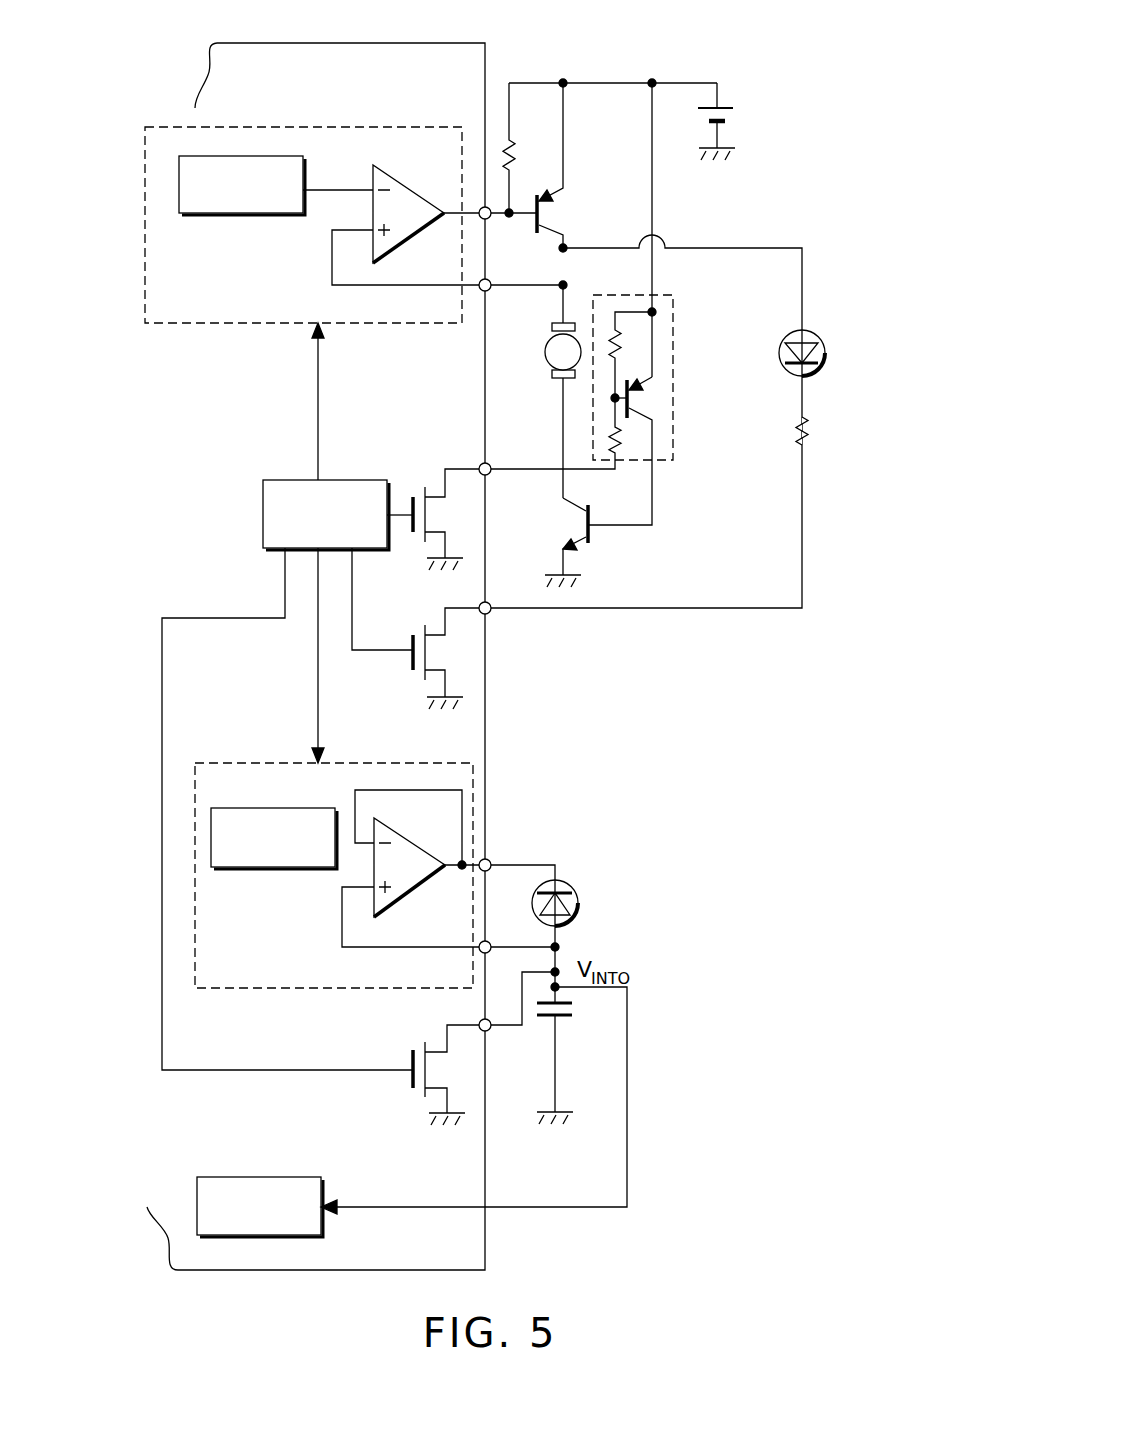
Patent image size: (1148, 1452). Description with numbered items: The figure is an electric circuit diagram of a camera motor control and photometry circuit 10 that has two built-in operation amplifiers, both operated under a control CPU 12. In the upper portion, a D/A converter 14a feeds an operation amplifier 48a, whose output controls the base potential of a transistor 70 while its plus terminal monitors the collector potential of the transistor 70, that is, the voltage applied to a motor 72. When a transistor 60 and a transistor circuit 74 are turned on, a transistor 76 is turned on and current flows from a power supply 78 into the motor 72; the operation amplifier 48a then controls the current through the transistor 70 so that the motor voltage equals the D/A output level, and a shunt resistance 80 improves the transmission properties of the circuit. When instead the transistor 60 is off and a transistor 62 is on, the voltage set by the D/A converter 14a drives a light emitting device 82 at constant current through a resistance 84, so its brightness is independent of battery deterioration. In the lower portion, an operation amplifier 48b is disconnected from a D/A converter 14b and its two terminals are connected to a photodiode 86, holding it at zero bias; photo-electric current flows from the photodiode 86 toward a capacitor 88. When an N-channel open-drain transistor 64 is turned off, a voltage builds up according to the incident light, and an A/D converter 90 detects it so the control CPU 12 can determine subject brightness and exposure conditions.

The control circuit 10 is at (350, 43).
The control CPU 12 is at (263, 500).
The D/A converter 14a is at (267, 155).
The D/A converter 14b is at (253, 808).
The operation amplifier 48a is at (413, 230).
The operation amplifier 48b is at (422, 887).
The transistor 60 is at (422, 490).
The transistor 62 is at (422, 628).
The N-channel open-drain transistor 64 is at (410, 1080).
The transistor 70 is at (547, 212).
The motor 72 is at (545, 362).
The transistor circuit 74 is at (673, 378).
The transistor 76 is at (592, 535).
The power supply 78 is at (736, 115).
The shunt resistance 80 is at (509, 150).
The light emitting device (LED) 82 is at (826, 352).
The resistance 84 is at (806, 420).
The photodiode 86 is at (580, 900).
The capacitor 88 is at (576, 1010).
The analog/digital (A/D) converter 90 is at (257, 1177).